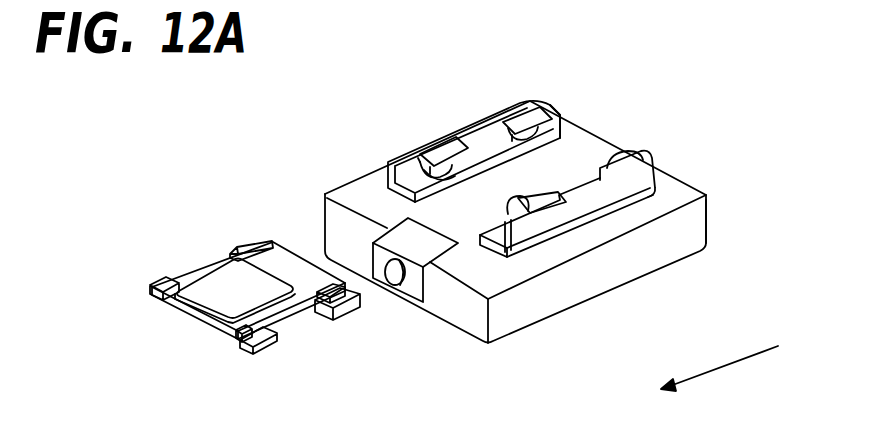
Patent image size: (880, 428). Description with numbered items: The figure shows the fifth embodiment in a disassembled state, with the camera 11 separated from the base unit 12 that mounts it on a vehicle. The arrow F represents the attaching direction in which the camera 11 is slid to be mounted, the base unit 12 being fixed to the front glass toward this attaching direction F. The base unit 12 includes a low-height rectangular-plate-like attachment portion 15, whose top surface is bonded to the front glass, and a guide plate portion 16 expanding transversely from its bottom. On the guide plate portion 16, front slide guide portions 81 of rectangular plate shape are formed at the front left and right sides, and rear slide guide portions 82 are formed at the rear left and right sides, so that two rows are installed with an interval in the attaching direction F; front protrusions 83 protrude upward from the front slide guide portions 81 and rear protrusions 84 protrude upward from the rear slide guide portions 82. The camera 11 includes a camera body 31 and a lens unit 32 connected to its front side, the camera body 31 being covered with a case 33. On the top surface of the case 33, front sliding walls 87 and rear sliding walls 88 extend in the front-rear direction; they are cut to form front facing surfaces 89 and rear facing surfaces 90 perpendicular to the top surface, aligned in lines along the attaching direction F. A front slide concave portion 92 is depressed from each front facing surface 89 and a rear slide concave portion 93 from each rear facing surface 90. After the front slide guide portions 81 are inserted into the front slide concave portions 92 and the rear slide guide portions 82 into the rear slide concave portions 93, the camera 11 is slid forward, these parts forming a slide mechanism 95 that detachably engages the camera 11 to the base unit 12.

The camera 11 is at (638, 295).
The base unit 12 is at (267, 284).
The attachment portion 15 is at (225, 282).
The guide plate portion 16 is at (177, 307).
The camera body 31 is at (631, 141).
The lens unit 32 is at (392, 240).
The case 33 is at (667, 246).
The front slide guide portion 81 is at (167, 279).
The rear slide guide portion 82 is at (242, 243).
The front protrusion 83 is at (163, 283).
The rear protrusion 84 is at (260, 242).
The front sliding wall 87 is at (441, 160).
The rear sliding wall 88 is at (521, 120).
The front facing surface 89 is at (421, 173).
The rear facing surface 90 is at (533, 122).
The front slide concave portion 92 is at (447, 141).
The rear slide concave portion 93 is at (561, 118).
The slide mechanism 95 is at (436, 170).
The attaching direction F is at (719, 374).